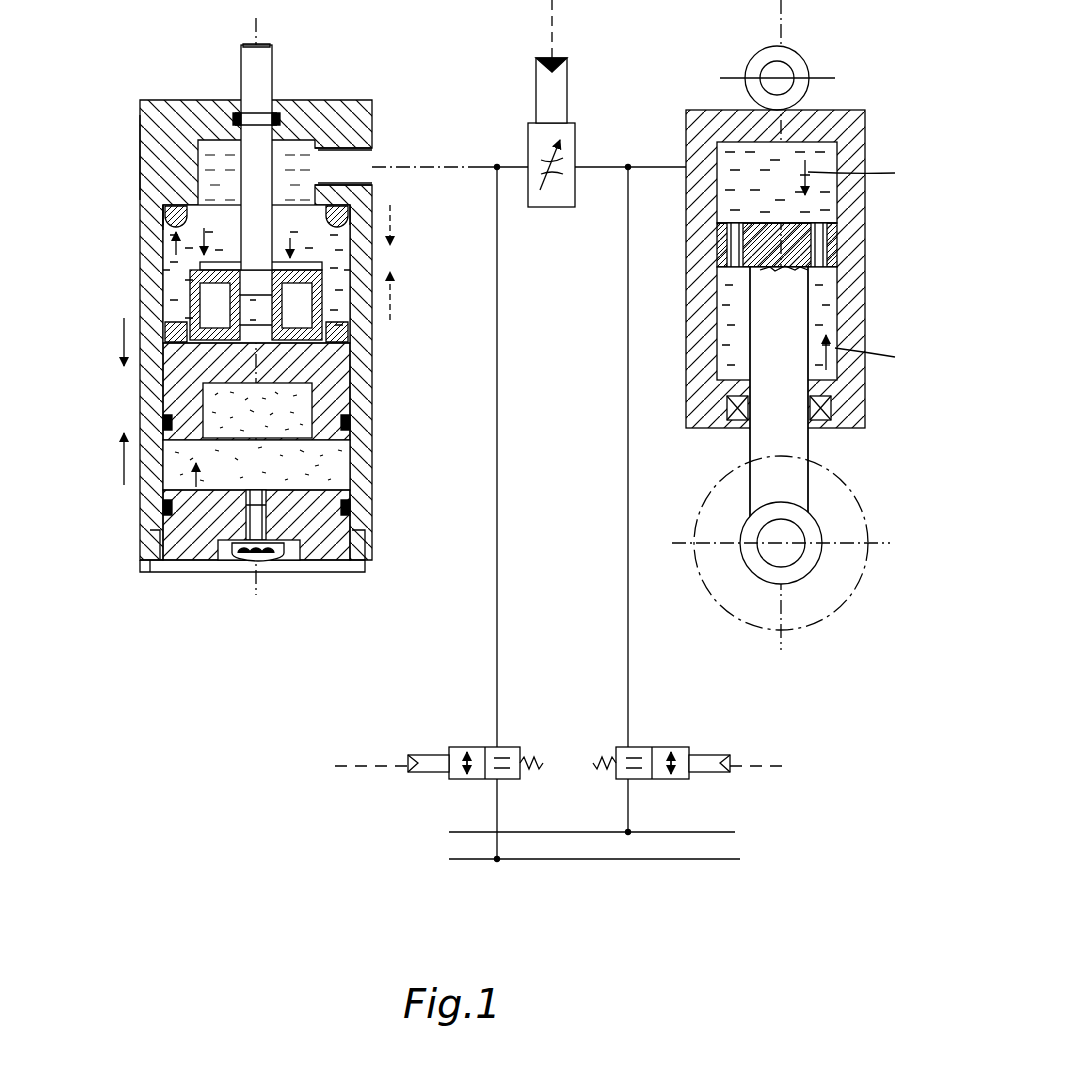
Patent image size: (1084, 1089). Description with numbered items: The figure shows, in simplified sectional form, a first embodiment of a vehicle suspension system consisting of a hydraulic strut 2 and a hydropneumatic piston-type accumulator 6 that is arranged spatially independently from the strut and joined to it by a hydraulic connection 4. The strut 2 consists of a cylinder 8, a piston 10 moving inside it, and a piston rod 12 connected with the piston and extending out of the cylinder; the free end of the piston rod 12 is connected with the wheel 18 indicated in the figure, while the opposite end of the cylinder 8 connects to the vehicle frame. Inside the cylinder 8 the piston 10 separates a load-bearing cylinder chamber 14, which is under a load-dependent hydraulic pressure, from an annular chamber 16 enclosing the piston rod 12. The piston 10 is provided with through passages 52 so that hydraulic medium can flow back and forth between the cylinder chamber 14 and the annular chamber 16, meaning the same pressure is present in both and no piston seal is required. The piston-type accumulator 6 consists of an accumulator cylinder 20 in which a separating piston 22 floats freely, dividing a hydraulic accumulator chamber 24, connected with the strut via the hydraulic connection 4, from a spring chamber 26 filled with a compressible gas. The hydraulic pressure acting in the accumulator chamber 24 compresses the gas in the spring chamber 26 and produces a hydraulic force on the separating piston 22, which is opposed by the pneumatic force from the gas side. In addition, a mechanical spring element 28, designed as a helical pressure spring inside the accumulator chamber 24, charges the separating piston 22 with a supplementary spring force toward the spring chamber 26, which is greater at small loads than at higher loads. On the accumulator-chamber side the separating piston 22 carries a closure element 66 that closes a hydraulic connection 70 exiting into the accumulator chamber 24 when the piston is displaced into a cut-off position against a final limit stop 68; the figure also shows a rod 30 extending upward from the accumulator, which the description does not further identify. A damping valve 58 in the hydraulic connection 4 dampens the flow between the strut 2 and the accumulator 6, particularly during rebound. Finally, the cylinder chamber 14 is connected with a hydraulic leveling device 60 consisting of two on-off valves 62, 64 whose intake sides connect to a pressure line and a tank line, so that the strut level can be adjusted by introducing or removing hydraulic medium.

The hydraulic strut 2 is at (787, 325).
The hydraulic connection 4 is at (458, 165).
The hydropneumatic piston-type accumulator 6 is at (239, 352).
The cylinder 8 is at (855, 305).
The piston 10 is at (840, 238).
The piston rod 12 is at (793, 440).
The cylinder chamber 14 is at (717, 205).
The annular chamber 16 is at (720, 318).
The wheel 18 is at (795, 543).
The accumulator cylinder 20 is at (362, 445).
The separating piston 22 is at (330, 375).
The hydraulic accumulator chamber 24 is at (165, 278).
The spring chamber 26 is at (312, 525).
The mechanical spring element 28 is at (163, 218).
The actuating rod 30 is at (265, 68).
The through passages 52 is at (720, 250).
The damping valve 58 is at (590, 125).
The hydraulic leveling device 60 is at (554, 771).
The on-off valve 62 is at (475, 742).
The on-off valve 64 is at (650, 742).
The closure element 66 is at (350, 120).
The final limit stop 68 is at (140, 200).
The hydraulic connection 70 is at (352, 166).